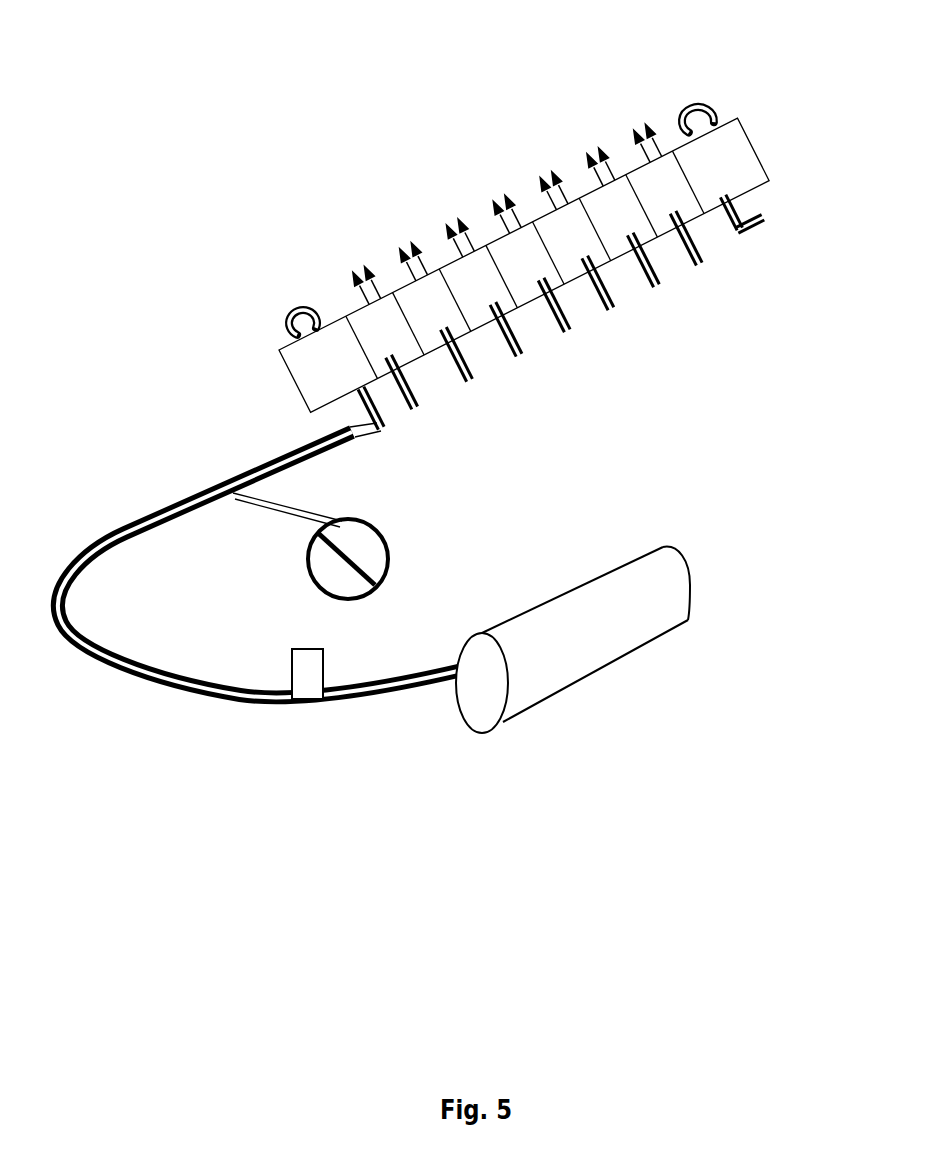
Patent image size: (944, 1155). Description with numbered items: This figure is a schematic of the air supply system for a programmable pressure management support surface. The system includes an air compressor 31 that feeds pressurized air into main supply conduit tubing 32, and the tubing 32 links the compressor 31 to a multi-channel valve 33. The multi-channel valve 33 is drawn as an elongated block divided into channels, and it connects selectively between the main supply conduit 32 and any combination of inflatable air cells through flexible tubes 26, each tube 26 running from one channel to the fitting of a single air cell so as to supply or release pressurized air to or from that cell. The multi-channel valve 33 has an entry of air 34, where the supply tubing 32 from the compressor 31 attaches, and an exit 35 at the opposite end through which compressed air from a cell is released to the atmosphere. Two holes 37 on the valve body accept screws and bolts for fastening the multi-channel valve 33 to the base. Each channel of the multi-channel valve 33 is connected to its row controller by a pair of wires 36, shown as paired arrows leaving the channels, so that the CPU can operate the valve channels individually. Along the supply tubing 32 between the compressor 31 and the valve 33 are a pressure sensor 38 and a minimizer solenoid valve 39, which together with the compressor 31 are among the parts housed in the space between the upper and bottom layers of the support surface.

The flexible tube 26 is at (416, 411).
The air compressor 31 is at (660, 635).
The main supply conduit tubing 32 is at (150, 686).
The multi-channel valve 33 is at (328, 374).
The entry of air 34 is at (383, 430).
The exit of compressed air 35 is at (764, 236).
The pair of wires 36 is at (345, 245).
The holes for screws and bolts 37 is at (284, 326).
The pressure sensor 38 is at (362, 598).
The minimizer solenoid valve 39 is at (313, 708).